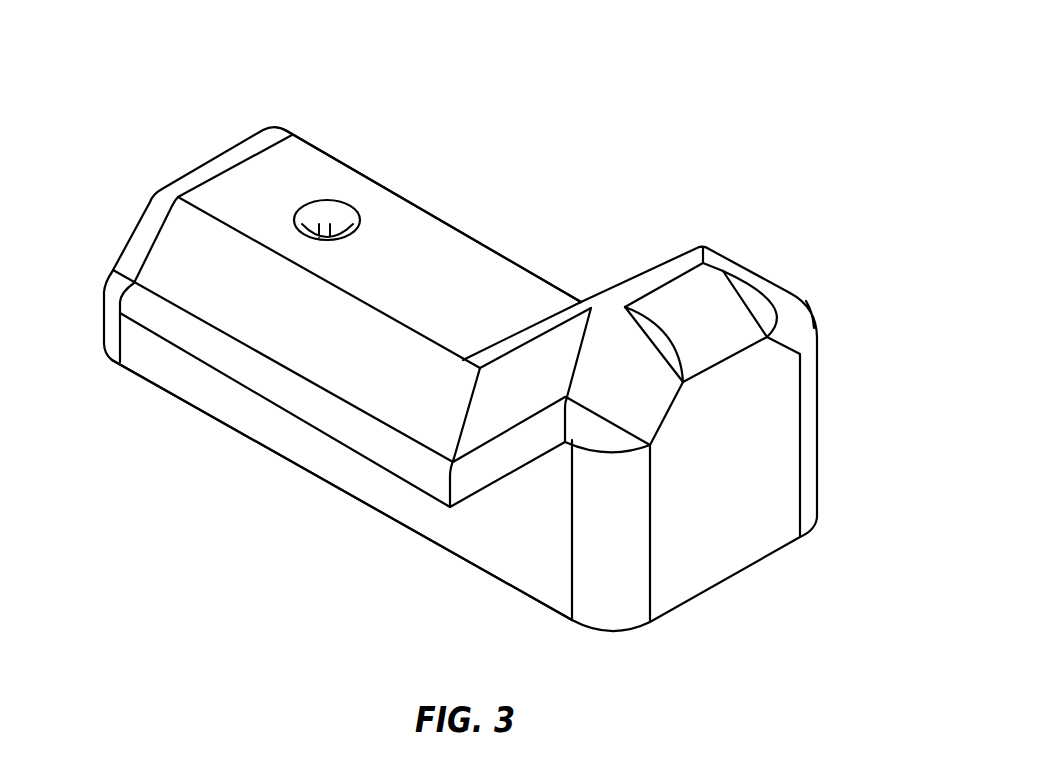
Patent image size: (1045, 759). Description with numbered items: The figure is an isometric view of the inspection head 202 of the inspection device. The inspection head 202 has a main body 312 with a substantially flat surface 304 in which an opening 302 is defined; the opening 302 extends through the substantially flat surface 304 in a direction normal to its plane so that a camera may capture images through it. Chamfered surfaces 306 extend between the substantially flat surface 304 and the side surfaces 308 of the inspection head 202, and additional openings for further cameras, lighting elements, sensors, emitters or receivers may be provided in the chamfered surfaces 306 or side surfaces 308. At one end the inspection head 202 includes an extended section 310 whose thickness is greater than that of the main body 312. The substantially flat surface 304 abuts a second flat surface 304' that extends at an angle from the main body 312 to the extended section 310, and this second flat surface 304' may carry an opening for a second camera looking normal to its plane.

The inspection head 202 is at (220, 87).
The opening 302 is at (333, 213).
The substantially flat surface 304 is at (344, 242).
The second flat surface 304' is at (685, 230).
The chamfered surface 306 is at (227, 295).
The side surface 308 is at (263, 422).
The extended section 310 is at (763, 467).
The main body 312 is at (475, 237).